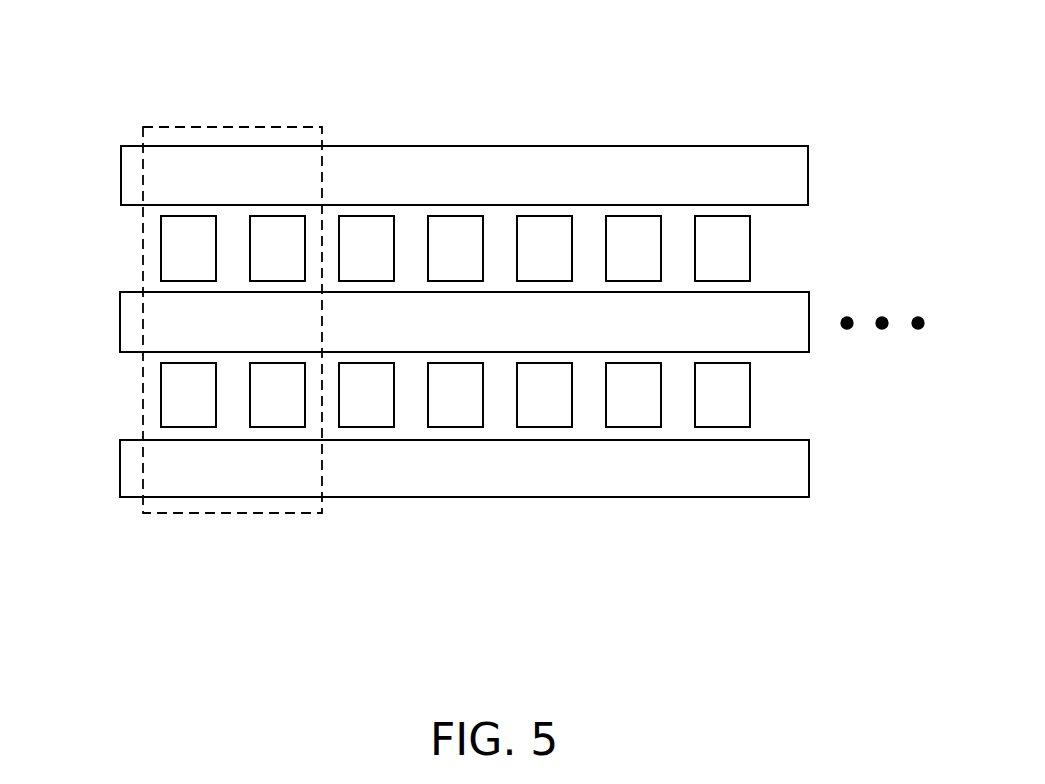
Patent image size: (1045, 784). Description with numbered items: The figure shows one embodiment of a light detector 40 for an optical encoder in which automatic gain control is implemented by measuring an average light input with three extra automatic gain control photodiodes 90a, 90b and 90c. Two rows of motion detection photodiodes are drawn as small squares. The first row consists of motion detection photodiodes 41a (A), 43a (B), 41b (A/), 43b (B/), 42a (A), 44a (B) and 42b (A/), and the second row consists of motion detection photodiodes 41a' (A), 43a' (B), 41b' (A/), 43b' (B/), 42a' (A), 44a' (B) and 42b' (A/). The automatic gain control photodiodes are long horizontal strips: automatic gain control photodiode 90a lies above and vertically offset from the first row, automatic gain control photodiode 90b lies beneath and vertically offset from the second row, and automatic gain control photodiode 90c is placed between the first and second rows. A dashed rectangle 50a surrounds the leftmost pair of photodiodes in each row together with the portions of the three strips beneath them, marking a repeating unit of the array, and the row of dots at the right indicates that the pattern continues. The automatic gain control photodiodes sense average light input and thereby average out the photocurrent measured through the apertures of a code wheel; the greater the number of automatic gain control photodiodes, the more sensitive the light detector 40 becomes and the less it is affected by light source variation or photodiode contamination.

The light detector 40 is at (788, 85).
The automatic gain control photodiode 90a is at (683, 158).
The automatic gain control photodiode 90b is at (678, 482).
The automatic gain control photodiode 90c is at (130, 320).
The basic cell group (dashed region) 50a is at (213, 513).
The motion detection photodiode (A) 41a is at (188, 227).
The motion detection photodiode (B) 43a is at (277, 227).
The motion detection photodiode (A/) 41b is at (366, 227).
The motion detection photodiode (B/) 43b is at (455, 227).
The motion detection photodiode (A) 42a is at (544, 227).
The motion detection photodiode (B) 44a is at (633, 227).
The motion detection photodiode (A/) 42b is at (722, 227).
The motion detection photodiode (A) 41a' is at (188, 369).
The motion detection photodiode (B) 43a' is at (277, 369).
The motion detection photodiode (A/) 41b' is at (366, 369).
The motion detection photodiode (B/) 43b' is at (455, 369).
The motion detection photodiode (A) 42a' is at (544, 369).
The motion detection photodiode (B) 44a' is at (633, 369).
The motion detection photodiode (A/) 42b' is at (722, 369).